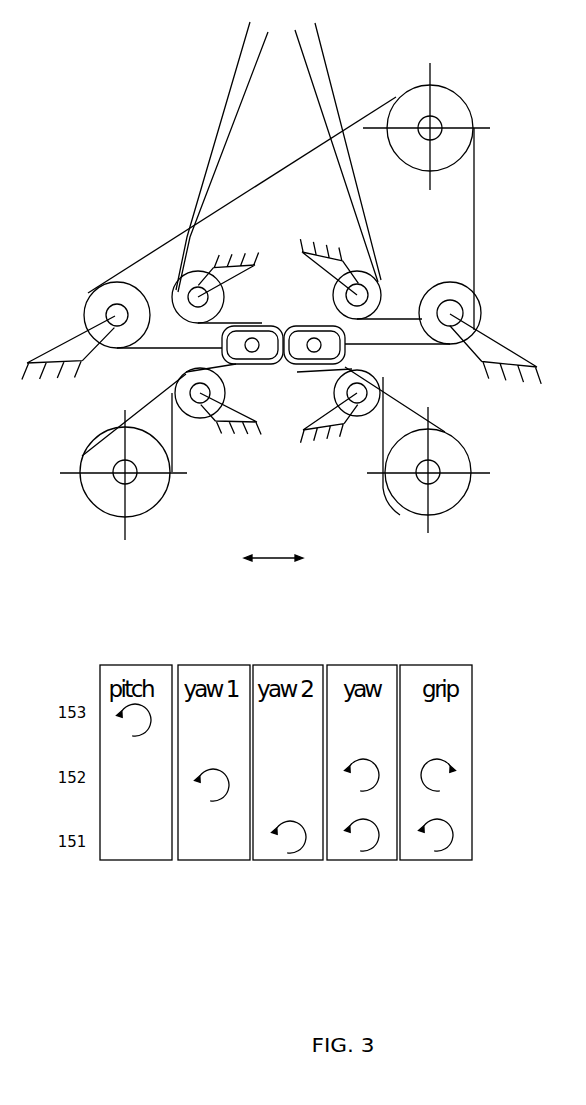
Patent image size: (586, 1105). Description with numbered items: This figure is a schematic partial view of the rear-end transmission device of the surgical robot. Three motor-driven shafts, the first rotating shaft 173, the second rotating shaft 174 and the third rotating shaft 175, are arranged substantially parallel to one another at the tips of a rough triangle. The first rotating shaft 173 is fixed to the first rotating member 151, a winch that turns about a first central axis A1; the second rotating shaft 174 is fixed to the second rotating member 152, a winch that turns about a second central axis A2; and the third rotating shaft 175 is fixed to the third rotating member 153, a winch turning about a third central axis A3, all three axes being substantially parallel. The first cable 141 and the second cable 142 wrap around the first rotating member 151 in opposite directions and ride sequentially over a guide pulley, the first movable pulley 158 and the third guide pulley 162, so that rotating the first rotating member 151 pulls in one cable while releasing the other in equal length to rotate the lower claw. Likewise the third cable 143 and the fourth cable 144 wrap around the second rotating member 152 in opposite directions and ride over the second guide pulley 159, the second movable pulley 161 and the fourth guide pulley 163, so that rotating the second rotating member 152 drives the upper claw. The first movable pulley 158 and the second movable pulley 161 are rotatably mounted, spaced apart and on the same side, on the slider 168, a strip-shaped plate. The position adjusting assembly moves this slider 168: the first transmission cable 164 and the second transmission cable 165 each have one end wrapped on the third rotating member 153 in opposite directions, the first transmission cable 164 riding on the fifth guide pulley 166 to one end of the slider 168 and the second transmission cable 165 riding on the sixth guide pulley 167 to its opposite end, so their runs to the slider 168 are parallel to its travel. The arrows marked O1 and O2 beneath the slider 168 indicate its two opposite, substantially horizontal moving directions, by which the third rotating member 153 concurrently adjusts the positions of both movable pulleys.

The first cable 141 is at (316, 100).
The second cable 142 is at (320, 36).
The third cable 143 is at (227, 101).
The fourth cable 144 is at (233, 127).
The first rotating member 151 is at (394, 519).
The second rotating member 152 is at (100, 509).
The third rotating member 153 is at (412, 168).
The first movable pulley 158 is at (298, 366).
The second guide pulley 159 is at (186, 436).
The second movable pulley 161 is at (263, 366).
The third guide pulley 162 is at (333, 296).
The fourth guide pulley 163 is at (224, 296).
The first transmission cable 164 is at (476, 222).
The second transmission cable 165 is at (376, 106).
The fifth guide pulley 166 is at (440, 284).
The sixth guide pulley 167 is at (131, 284).
The slider 168 is at (386, 368).
The first rotating shaft 173 is at (396, 504).
The second rotating shaft 174 is at (83, 476).
The third rotating shaft 175 is at (414, 139).
The first central axis A1 is at (438, 466).
The second central axis A2 is at (132, 469).
The third central axis A3 is at (440, 125).
The direction O1 is at (295, 548).
The direction O2 is at (270, 548).